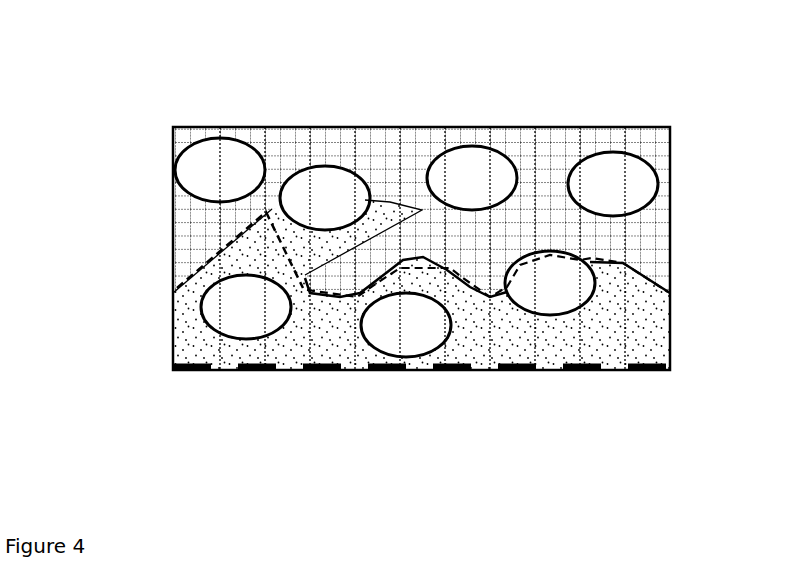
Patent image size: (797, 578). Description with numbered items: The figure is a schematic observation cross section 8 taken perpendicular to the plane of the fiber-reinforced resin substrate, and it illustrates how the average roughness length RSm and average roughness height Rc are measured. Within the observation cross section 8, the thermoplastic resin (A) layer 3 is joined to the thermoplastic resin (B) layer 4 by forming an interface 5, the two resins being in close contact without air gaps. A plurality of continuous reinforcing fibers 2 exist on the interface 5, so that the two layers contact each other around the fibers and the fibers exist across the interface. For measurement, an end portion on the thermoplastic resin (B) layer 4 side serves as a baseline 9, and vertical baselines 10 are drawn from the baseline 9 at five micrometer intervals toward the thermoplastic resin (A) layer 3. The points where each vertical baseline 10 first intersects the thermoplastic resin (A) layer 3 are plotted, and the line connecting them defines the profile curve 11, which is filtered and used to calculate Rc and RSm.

The reinforcing fiber 2 is at (637, 172).
The thermoplastic resin (A) layer 3 is at (648, 235).
The thermoplastic resin (B) layer 4 is at (653, 338).
The interface 5 is at (421, 209).
The observation cross section 8 is at (602, 100).
The baseline 9 is at (192, 373).
The vertical baseline 10 is at (307, 147).
The profile curve 11 is at (355, 247).